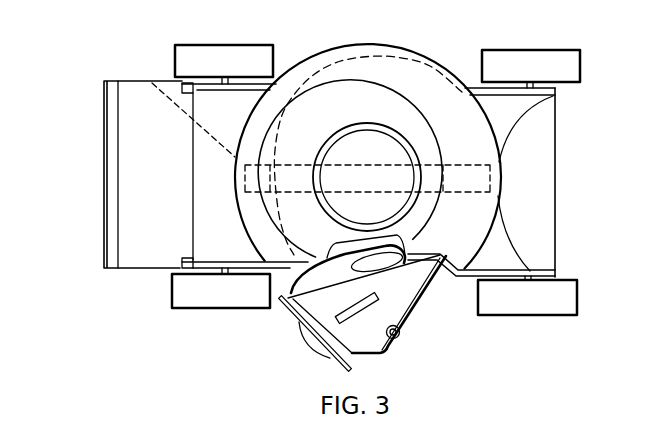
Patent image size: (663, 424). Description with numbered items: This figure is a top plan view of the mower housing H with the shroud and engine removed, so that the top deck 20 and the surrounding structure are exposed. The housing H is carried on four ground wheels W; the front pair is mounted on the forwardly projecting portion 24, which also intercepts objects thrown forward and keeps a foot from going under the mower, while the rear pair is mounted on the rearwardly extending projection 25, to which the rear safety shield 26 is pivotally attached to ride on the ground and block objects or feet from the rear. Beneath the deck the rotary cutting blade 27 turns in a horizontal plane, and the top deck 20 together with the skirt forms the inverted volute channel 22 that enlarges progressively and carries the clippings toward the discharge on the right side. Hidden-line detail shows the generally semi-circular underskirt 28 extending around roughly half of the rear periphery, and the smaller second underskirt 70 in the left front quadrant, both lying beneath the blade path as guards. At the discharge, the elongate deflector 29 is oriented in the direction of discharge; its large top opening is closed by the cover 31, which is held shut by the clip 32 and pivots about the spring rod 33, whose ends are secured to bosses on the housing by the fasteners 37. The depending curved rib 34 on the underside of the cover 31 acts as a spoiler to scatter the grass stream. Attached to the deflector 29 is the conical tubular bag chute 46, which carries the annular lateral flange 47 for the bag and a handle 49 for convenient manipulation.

The ground wheel W is at (176, 60).
The rotary cutting blade 27 is at (152, 82).
The underskirt 28 is at (287, 76).
The top deck 20 is at (323, 100).
The second underskirt 70 is at (413, 62).
The housing H is at (438, 54).
The inverted volute channel 22 is at (482, 150).
The forwardly projecting portion 24 is at (543, 215).
The rear safety shield 26 is at (125, 162).
The rearwardly extending projection 25 is at (203, 208).
The cover 31 is at (343, 287).
The depending curved rib 34 is at (399, 250).
The spring rod 33 is at (404, 300).
The bag chute 46 is at (298, 322).
The annular lateral flange 47 is at (338, 363).
The handle 49 is at (359, 321).
The clip 32 is at (400, 332).
The deflector 29 is at (398, 340).
The fasteners 37 is at (313, 258).